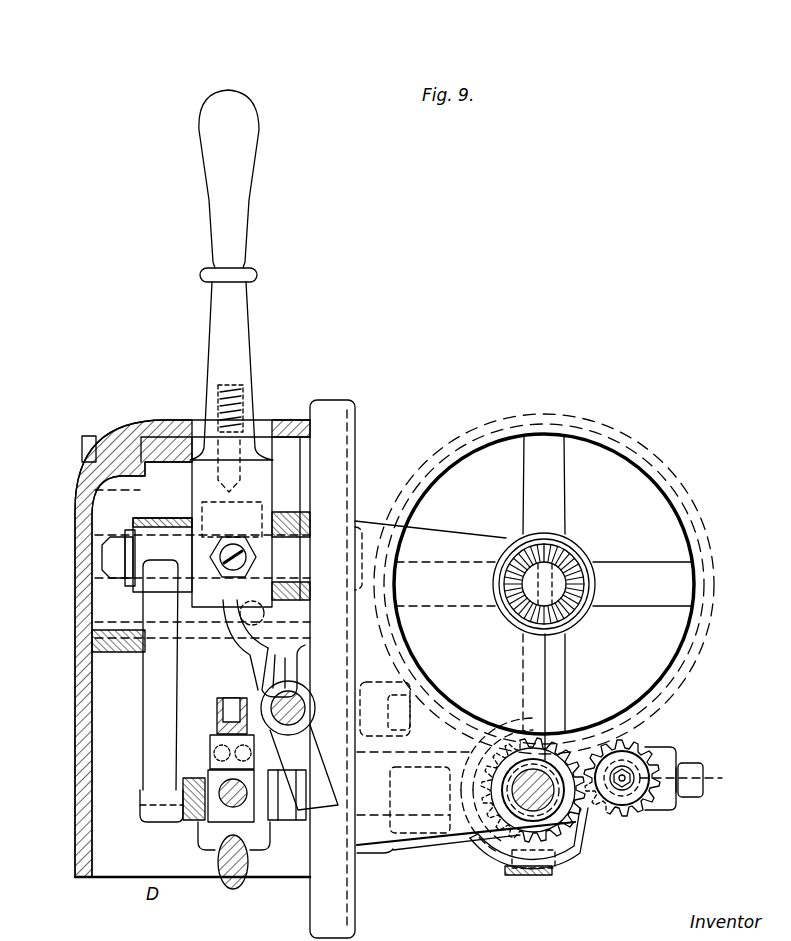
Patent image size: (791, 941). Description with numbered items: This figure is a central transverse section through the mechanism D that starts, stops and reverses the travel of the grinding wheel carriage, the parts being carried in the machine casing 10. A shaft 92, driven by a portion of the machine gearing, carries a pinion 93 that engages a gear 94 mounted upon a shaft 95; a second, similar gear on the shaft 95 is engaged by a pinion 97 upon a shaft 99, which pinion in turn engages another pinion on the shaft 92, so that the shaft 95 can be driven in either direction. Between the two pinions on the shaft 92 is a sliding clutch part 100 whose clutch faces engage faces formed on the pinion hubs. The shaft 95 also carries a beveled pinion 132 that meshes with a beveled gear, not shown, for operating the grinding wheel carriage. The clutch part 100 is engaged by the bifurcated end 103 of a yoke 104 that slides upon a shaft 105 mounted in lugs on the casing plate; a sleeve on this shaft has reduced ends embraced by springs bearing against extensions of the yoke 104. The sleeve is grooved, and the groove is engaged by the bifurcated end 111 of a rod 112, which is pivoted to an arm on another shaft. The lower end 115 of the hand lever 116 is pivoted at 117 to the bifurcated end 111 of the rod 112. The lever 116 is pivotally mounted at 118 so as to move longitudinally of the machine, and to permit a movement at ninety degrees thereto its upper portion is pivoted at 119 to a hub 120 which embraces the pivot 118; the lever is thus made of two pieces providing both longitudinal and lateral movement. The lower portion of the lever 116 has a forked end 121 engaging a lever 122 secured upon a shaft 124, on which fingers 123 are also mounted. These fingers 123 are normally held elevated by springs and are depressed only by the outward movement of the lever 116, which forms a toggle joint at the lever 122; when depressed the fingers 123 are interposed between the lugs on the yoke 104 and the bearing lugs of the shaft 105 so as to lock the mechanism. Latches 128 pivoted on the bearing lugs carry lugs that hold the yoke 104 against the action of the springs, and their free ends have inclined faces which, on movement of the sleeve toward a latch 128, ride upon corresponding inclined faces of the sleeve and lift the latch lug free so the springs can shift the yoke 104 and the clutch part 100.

The housing frame 10 is at (140, 714).
The shaft 92 is at (522, 808).
The pinion 93 is at (588, 812).
The gear 94 is at (703, 530).
The shaft 95 is at (559, 571).
The pinion 97 is at (648, 748).
The shaft 99 is at (640, 796).
The sliding clutch part 100 is at (580, 858).
The bifurcated end 103 is at (512, 876).
The yoke 104 is at (445, 852).
The shaft 105 is at (212, 824).
The bifurcated end 111 is at (222, 800).
The rod 112 is at (236, 890).
The lower end 115 is at (150, 686).
The hand lever 116 is at (248, 358).
The pivot 117 is at (142, 796).
The pivot 118 is at (112, 557).
The pivot 119 is at (222, 556).
The hub 120 is at (165, 518).
The forked end 121 is at (248, 658).
The lever 122 is at (270, 670).
The fingers 123 is at (308, 812).
The shaft 124 is at (300, 702).
The latches 128 is at (217, 720).
The beveled pinion 132 is at (590, 614).